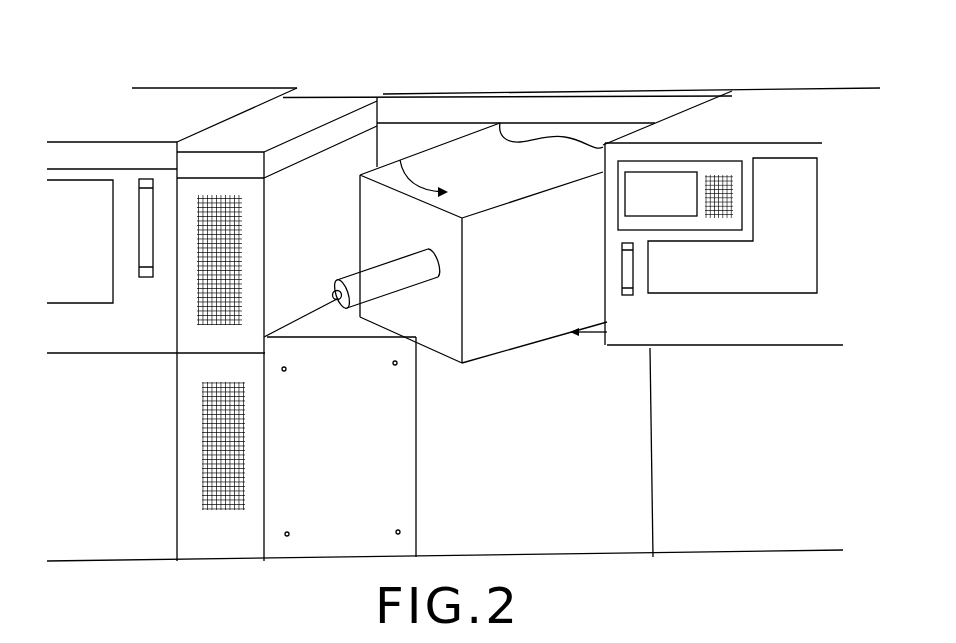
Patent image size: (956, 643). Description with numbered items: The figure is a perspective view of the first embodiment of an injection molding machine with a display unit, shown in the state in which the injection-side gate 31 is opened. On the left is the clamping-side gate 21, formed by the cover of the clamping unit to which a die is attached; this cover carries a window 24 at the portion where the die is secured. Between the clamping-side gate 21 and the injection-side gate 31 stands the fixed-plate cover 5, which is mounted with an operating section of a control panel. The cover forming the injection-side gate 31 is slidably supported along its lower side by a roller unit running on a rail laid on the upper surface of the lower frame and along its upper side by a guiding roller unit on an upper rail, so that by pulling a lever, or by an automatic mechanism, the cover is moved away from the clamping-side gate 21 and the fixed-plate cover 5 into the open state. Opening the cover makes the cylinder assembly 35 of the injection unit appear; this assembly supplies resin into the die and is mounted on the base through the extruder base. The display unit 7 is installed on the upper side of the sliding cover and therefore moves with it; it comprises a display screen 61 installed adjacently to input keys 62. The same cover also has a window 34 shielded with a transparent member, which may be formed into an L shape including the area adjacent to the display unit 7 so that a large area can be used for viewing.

The clamping-side gate 21 is at (128, 113).
The window 24 is at (67, 283).
The fixed-plate cover 5 is at (243, 152).
The cylinder assembly 35 is at (377, 300).
The injection-side gate 31 is at (740, 313).
The display unit 7 is at (663, 156).
The display screen 61 is at (680, 183).
The input keys 62 is at (722, 175).
The window 34 is at (787, 263).